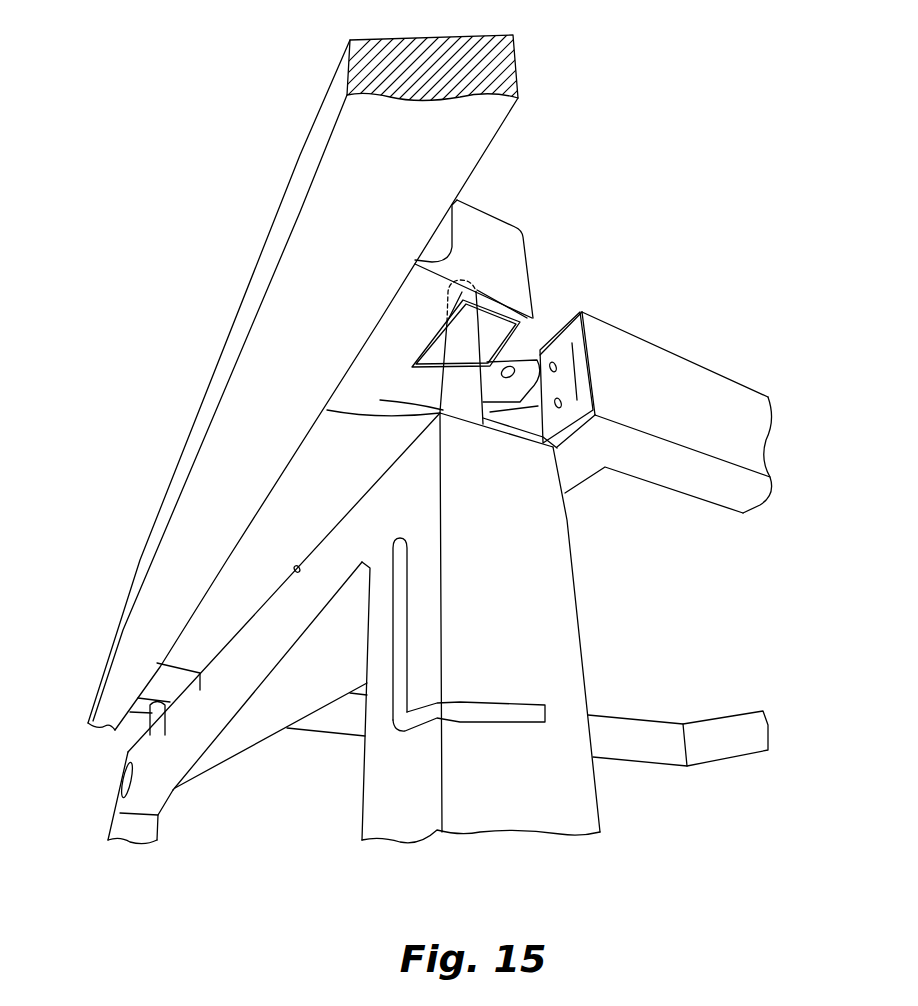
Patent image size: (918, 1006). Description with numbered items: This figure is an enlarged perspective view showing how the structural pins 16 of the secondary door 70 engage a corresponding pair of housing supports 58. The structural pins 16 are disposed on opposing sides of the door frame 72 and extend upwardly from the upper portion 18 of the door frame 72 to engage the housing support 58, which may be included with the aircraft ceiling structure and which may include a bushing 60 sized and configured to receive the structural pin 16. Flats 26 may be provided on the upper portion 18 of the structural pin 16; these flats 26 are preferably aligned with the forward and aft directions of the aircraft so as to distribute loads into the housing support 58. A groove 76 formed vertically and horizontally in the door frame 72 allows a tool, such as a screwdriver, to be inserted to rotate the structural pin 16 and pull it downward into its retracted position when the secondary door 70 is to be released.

The structural pin 16 is at (445, 355).
The upper portion 18 is at (450, 402).
The flats 26 is at (450, 322).
The housing support 58 is at (490, 210).
The bushing 60 is at (440, 365).
The secondary door 70 is at (112, 860).
The door frame 72 is at (547, 552).
The groove 76 is at (400, 657).